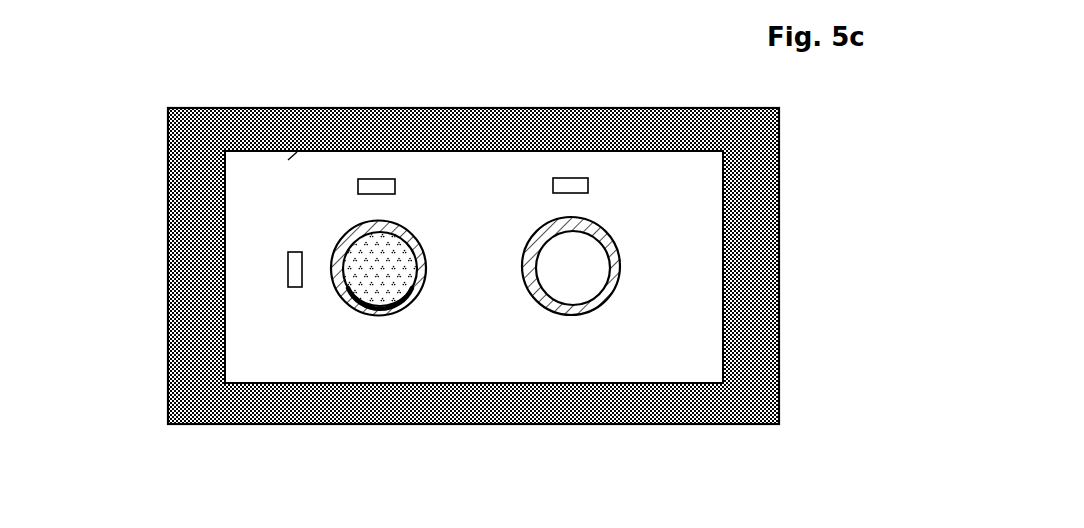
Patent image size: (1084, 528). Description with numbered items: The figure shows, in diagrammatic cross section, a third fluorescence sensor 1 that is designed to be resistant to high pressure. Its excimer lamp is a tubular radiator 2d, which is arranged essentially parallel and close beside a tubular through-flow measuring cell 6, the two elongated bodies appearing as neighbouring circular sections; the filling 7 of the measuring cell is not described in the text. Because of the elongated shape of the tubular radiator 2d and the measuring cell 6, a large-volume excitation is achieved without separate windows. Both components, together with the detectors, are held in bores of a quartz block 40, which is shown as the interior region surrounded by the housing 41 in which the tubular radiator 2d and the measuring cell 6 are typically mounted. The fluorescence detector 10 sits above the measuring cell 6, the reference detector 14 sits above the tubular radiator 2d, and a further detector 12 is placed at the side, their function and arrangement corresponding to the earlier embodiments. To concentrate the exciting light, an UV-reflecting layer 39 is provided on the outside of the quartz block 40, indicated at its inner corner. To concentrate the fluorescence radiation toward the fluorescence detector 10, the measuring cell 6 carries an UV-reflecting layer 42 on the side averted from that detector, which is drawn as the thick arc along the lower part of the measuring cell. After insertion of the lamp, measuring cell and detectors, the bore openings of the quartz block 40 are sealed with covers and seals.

The fluorescence sensor 1 is at (133, 113).
The tubular radiator 2d is at (635, 267).
The tubular through-flow measuring cell 6 is at (334, 272).
The filling material 7 is at (392, 278).
The fluorescence detector 10 is at (378, 187).
The detector 12 is at (296, 270).
The reference detector 14 is at (571, 185).
The UV-reflecting layer 39 is at (290, 158).
The quartz block 40 is at (653, 343).
The housing 41 is at (751, 188).
The UV-reflecting layer 42 is at (379, 308).